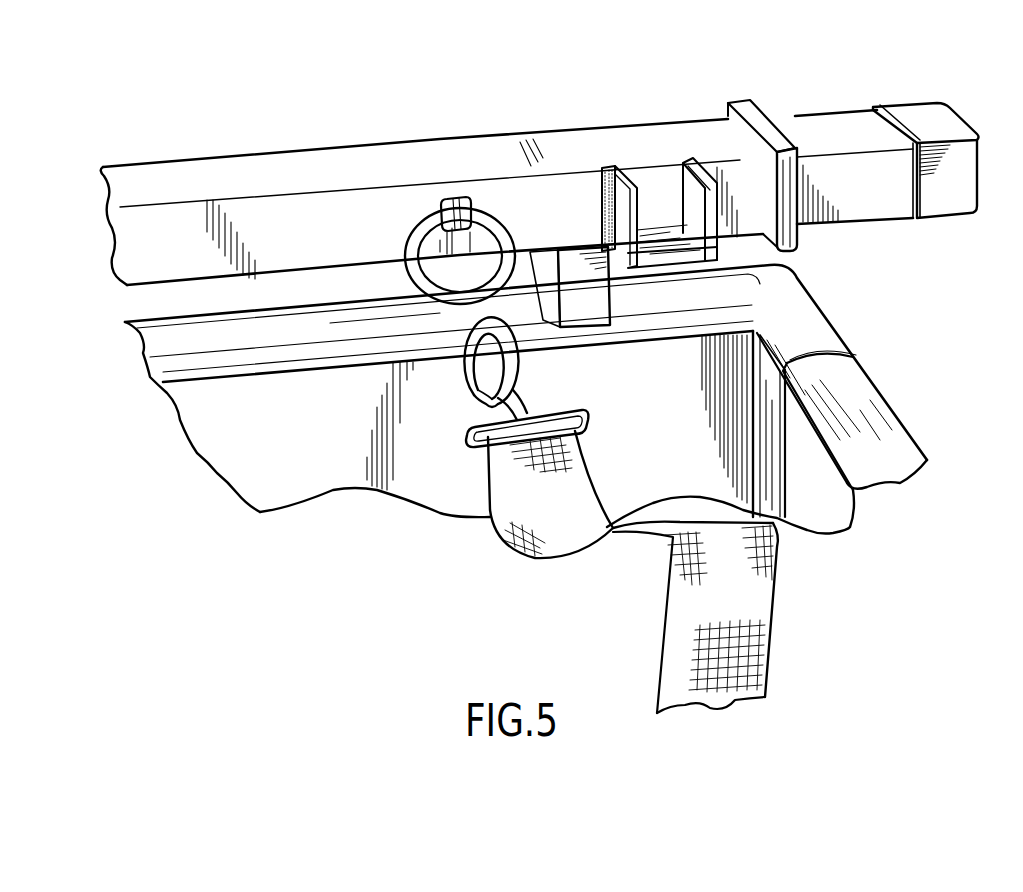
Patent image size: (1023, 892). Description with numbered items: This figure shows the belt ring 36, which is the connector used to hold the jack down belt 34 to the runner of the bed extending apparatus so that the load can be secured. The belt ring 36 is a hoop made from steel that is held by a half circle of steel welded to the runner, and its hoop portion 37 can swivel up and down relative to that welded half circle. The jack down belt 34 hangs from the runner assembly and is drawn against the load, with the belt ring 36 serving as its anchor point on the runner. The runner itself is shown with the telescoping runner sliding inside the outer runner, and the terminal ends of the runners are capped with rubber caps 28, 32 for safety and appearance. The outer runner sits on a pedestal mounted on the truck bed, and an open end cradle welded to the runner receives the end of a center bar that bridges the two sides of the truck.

The belt ring 36 is at (462, 200).
The hoop portion 37 is at (500, 230).
The rubber cap 28 is at (730, 103).
The rubber cap 32 is at (910, 127).
The jack down belt 34 is at (500, 485).